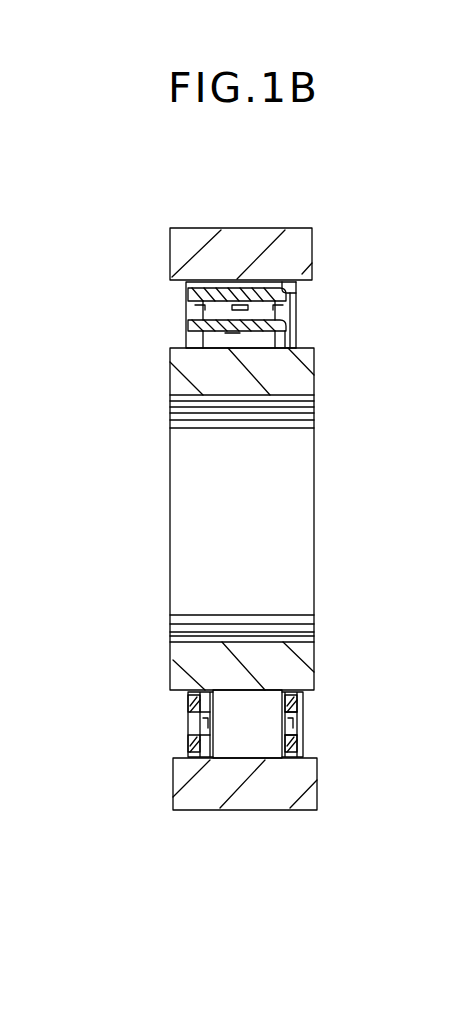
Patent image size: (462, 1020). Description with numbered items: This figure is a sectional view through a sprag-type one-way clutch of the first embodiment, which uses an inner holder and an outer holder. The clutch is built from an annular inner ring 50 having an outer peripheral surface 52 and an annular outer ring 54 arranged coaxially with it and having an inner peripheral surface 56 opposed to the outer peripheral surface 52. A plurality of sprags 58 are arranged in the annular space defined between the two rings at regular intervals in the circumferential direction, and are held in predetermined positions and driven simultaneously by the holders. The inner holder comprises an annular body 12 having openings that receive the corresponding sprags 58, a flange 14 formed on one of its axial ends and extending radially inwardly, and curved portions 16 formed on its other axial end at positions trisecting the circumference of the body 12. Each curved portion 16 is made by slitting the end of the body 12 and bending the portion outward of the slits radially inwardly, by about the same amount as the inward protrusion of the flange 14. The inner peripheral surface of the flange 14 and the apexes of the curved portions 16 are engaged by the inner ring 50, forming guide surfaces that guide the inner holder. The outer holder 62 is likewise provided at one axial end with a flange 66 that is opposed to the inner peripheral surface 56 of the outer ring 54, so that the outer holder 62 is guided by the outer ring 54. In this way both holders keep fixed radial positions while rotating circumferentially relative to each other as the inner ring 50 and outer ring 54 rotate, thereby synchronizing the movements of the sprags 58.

The annular body 12 is at (229, 345).
The flange 14 is at (297, 333).
The curved portions 16 is at (188, 695).
The inner ring 50 is at (305, 378).
The outer peripheral surface 52 is at (316, 690).
The outer ring 54 is at (295, 240).
The inner peripheral surface 56 is at (315, 758).
The sprags 58 is at (264, 738).
The outer holder 62 is at (188, 293).
The flange 66 is at (296, 288).